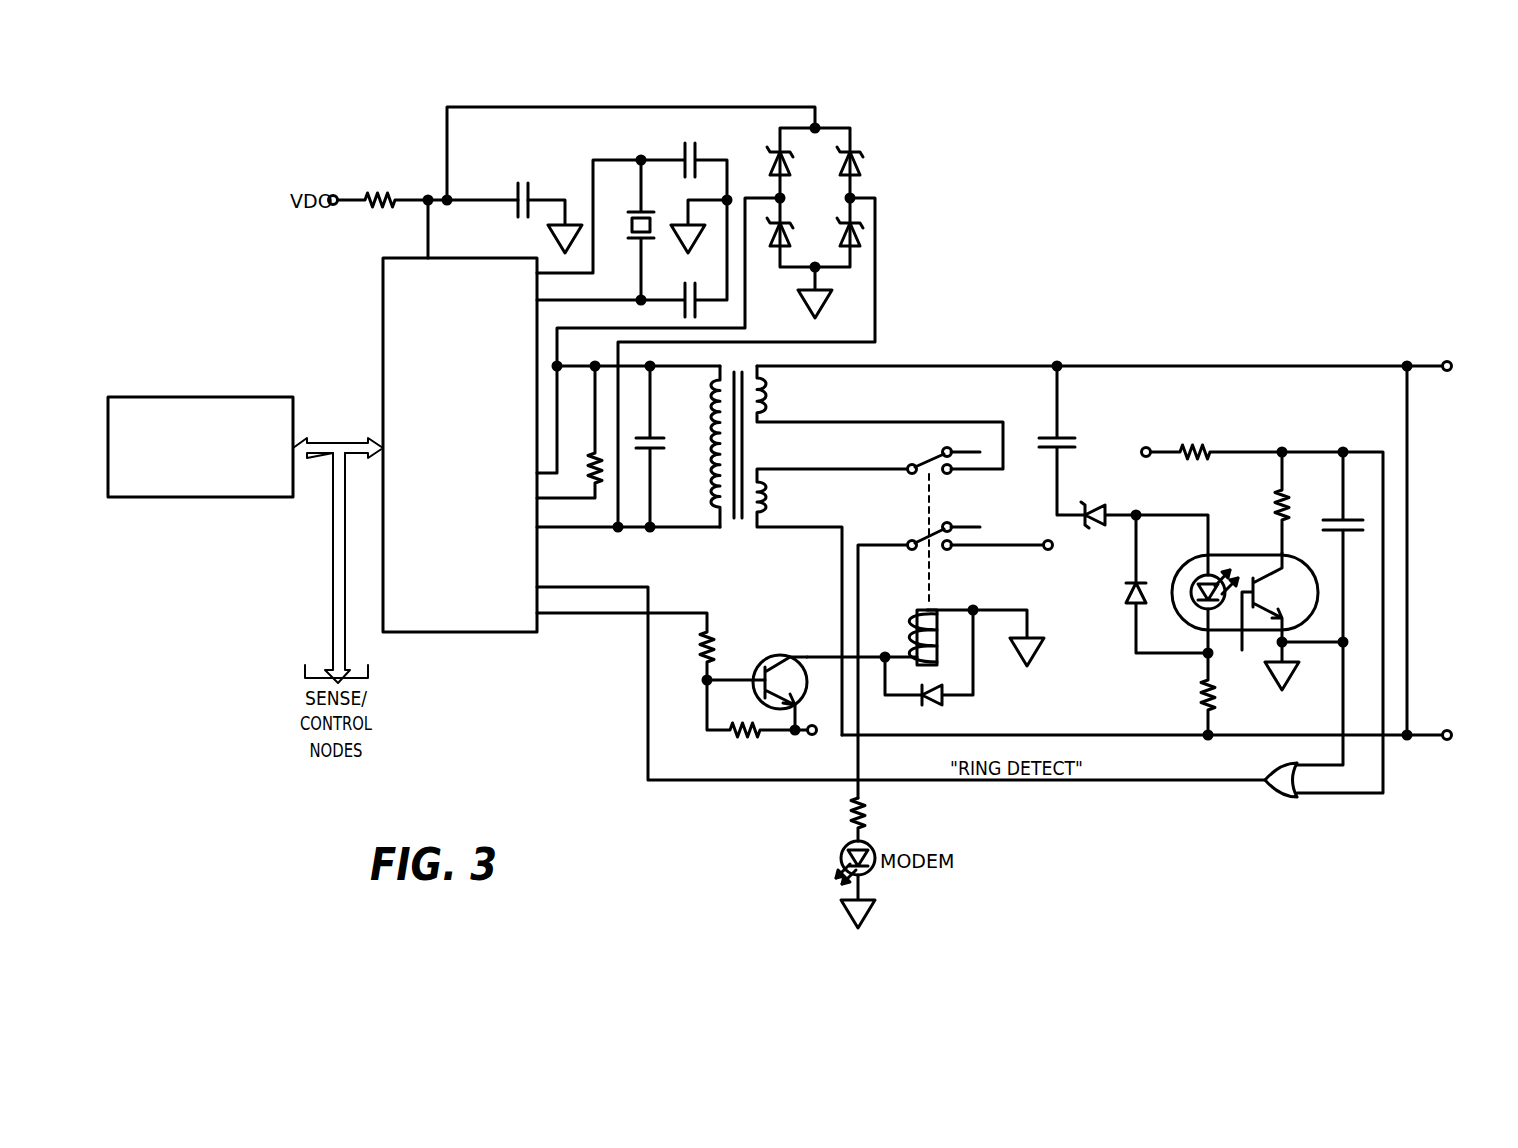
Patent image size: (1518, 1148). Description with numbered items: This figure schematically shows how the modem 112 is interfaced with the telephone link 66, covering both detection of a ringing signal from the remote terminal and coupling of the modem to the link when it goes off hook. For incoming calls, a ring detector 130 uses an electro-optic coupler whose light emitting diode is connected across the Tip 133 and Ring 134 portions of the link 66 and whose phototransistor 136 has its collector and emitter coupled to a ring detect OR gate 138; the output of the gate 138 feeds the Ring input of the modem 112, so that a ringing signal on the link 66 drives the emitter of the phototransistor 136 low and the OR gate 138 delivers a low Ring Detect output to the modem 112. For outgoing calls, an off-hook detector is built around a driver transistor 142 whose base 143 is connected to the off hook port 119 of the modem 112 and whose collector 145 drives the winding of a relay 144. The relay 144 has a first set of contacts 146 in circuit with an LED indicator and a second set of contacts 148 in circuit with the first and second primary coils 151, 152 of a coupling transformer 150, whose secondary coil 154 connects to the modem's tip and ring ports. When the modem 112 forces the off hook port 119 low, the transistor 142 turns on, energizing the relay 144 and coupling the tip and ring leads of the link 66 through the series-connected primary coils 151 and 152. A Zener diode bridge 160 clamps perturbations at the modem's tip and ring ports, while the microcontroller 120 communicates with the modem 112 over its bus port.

The link 66 is at (1135, 562).
The modem 112 is at (383, 300).
The off hook port 119 is at (565, 587).
The microcontroller 120 is at (207, 397).
The ring detector 130 is at (1211, 579).
The Tip 133 is at (1430, 365).
The Ring 134 is at (1428, 745).
The phototransistor 136 is at (1248, 555).
The ring detect OR gate 138 is at (1285, 797).
The driver transistor 142 is at (778, 735).
The base 143 is at (743, 680).
The relay 144 is at (907, 632).
The collector 145 is at (813, 657).
The first set of contacts 146 is at (926, 540).
The relay switch 148 is at (930, 463).
The coupling transformer 150 is at (832, 550).
The first primary coil 151 is at (770, 395).
The second primary coil 152 is at (770, 495).
The secondary coil 154 is at (705, 430).
The Zener diode bridge 160 is at (858, 165).